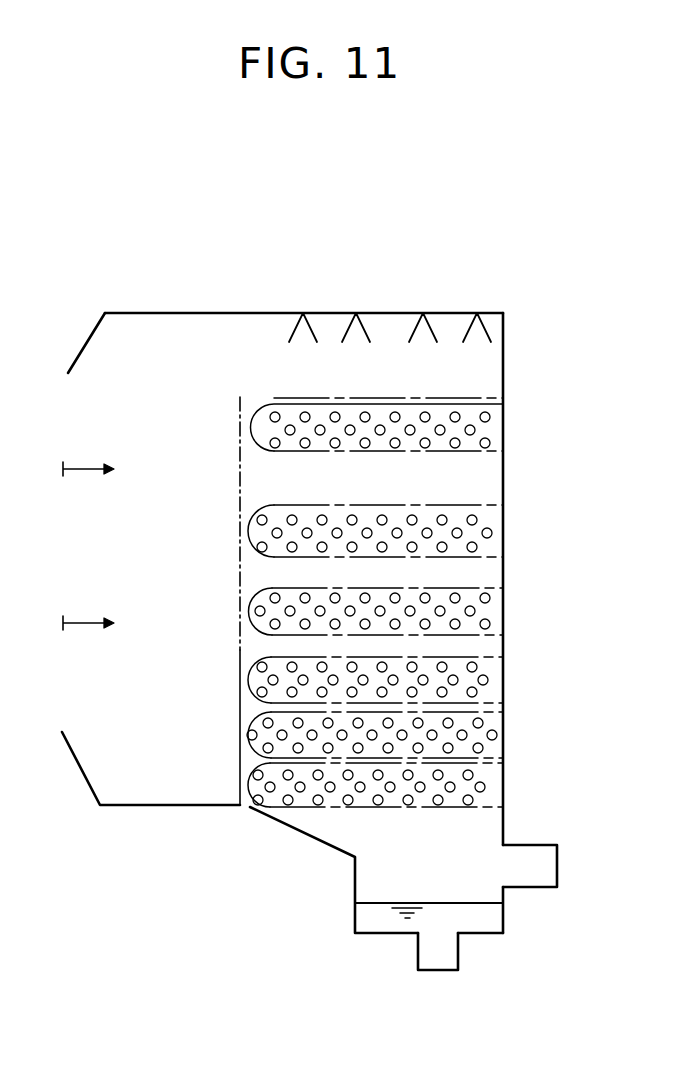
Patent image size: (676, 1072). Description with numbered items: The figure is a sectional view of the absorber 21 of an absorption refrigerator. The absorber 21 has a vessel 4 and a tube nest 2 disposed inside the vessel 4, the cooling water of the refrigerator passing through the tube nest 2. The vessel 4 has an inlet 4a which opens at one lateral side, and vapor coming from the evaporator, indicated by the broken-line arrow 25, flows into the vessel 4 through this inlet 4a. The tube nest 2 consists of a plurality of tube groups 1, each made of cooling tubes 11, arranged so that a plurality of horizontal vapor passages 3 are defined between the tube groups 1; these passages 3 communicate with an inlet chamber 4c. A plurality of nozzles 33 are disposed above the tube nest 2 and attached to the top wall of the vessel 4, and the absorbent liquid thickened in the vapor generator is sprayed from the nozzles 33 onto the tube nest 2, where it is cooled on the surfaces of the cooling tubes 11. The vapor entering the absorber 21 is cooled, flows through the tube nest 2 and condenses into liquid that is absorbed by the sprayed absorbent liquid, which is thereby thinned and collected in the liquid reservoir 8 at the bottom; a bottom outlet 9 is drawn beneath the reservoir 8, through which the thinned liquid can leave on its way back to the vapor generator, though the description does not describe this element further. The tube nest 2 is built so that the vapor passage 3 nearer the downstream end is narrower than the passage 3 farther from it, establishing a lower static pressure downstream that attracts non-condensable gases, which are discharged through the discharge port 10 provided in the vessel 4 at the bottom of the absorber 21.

The absorber 21 is at (194, 301).
The nozzles 33 is at (341, 313).
The vessel 4 is at (503, 368).
The inlet 4a is at (93, 693).
The inlet chamber 4c is at (135, 591).
The broken-line arrow 25 is at (68, 469).
The tube groups 1 is at (248, 408).
The tube nest 2 is at (240, 460).
The horizontal vapor passages 3 is at (258, 576).
The cooling tubes 11 is at (250, 714).
The liquid reservoir 8 is at (380, 925).
The drain outlet 9 is at (440, 970).
The discharge port 10 is at (557, 857).